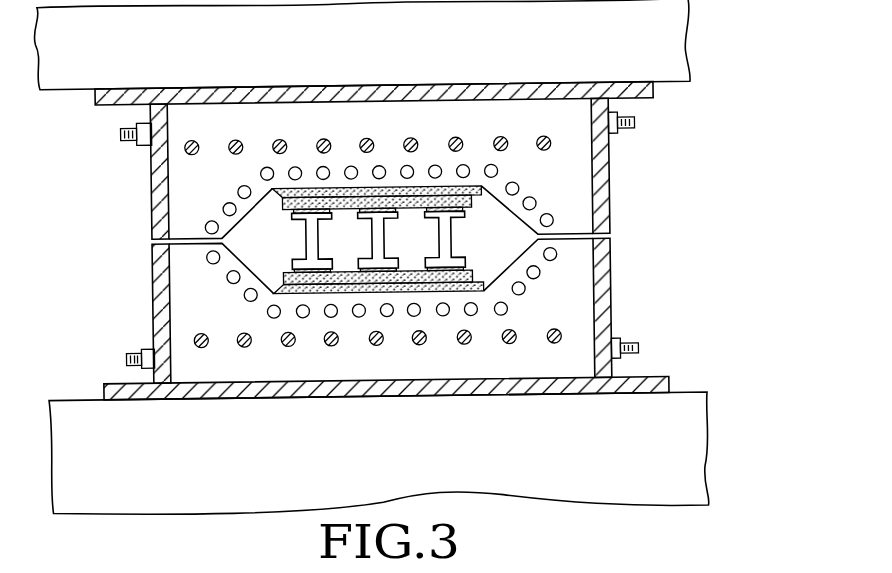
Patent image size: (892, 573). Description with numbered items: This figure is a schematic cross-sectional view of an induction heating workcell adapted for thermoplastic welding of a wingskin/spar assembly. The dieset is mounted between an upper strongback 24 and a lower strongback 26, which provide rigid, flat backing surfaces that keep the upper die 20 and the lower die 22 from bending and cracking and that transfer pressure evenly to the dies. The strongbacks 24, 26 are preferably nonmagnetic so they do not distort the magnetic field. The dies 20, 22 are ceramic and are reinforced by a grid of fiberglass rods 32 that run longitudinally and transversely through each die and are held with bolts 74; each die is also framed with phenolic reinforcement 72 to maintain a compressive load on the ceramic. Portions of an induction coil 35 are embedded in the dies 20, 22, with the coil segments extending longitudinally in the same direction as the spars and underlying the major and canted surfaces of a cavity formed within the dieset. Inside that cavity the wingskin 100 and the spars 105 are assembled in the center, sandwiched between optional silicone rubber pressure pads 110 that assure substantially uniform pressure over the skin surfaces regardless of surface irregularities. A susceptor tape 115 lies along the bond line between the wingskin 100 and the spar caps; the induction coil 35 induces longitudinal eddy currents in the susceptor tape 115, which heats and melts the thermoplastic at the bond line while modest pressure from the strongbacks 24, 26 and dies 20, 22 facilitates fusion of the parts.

The upper strongback 24 is at (692, 59).
The lower strongback 26 is at (702, 457).
The upper die 20 is at (380, 168).
The lower die 22 is at (541, 369).
The fiberglass rods 32 is at (544, 138).
The bolts 74 is at (616, 136).
The phenolic reinforcement 72 is at (150, 145).
The induction coil 35 is at (554, 222).
The wingskin 100 is at (428, 265).
The spars 105 is at (372, 243).
The silicone rubber pressure pads 110 is at (484, 187).
The susceptor tape 115 is at (292, 270).